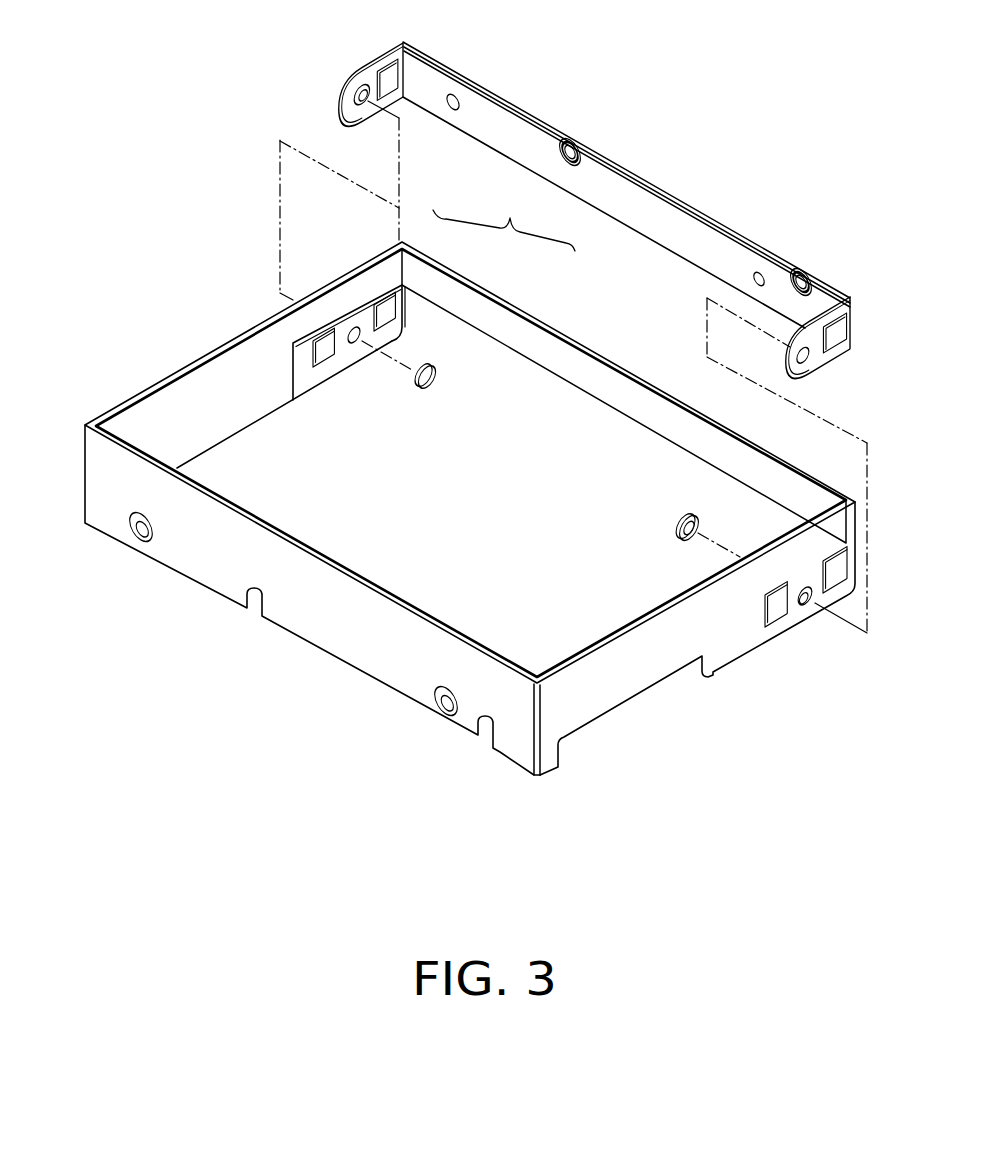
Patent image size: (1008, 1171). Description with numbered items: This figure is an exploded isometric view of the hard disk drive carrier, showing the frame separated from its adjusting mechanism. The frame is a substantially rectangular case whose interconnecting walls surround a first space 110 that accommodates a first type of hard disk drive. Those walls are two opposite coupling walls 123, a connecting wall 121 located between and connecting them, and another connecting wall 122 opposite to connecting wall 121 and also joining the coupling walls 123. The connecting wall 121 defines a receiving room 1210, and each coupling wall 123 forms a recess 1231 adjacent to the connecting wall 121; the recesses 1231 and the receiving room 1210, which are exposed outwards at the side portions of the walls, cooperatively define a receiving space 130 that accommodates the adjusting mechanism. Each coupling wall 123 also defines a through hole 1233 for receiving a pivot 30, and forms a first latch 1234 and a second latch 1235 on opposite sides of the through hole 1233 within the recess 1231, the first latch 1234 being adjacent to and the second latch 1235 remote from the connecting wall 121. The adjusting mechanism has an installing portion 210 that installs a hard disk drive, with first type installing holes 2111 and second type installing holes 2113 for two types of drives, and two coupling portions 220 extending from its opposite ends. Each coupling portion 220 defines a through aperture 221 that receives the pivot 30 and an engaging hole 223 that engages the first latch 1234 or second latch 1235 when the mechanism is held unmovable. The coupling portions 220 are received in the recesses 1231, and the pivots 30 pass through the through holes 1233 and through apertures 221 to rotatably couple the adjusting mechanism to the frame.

The first space 110 is at (238, 468).
The connecting wall 121 is at (611, 383).
The connecting wall 122 is at (322, 633).
The coupling wall 123 is at (608, 688).
The receiving room 1210 is at (462, 333).
The receiving space 130 is at (344, 293).
The recess 1231 is at (404, 306).
The through hole 1233 is at (348, 320).
The first latch 1234 is at (379, 305).
The second latch 1235 is at (312, 346).
The pivot 30 is at (437, 377).
The installing portion 210 is at (540, 134).
The first type of installing hole 2111 is at (455, 97).
The second type of installing hole 2113 is at (808, 272).
The coupling portion 220 is at (812, 362).
The through aperture 221 is at (350, 88).
The engaging hole 223 is at (386, 70).